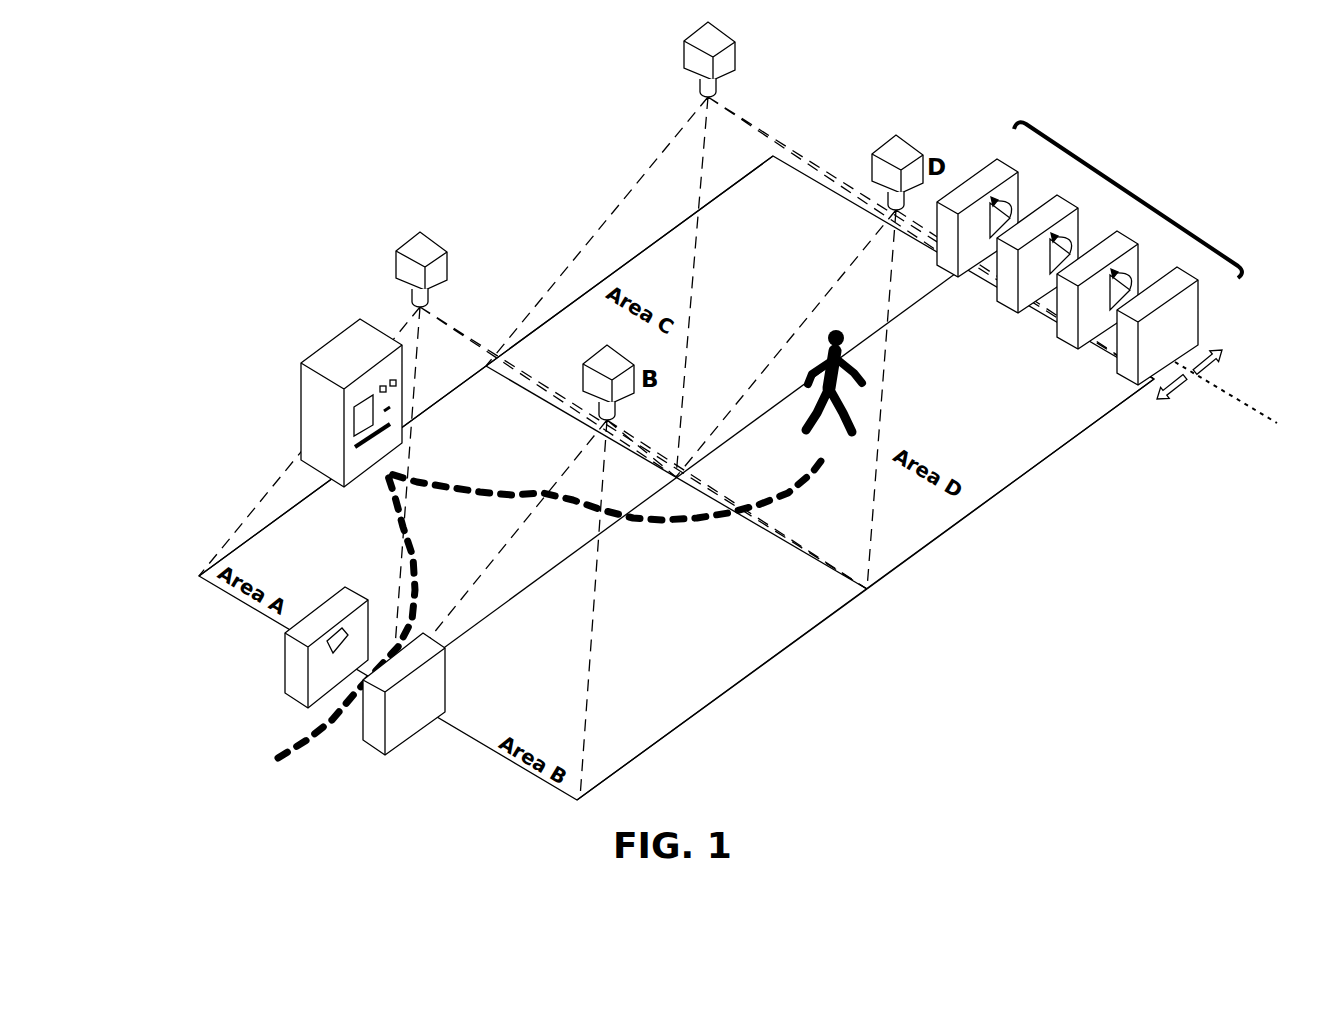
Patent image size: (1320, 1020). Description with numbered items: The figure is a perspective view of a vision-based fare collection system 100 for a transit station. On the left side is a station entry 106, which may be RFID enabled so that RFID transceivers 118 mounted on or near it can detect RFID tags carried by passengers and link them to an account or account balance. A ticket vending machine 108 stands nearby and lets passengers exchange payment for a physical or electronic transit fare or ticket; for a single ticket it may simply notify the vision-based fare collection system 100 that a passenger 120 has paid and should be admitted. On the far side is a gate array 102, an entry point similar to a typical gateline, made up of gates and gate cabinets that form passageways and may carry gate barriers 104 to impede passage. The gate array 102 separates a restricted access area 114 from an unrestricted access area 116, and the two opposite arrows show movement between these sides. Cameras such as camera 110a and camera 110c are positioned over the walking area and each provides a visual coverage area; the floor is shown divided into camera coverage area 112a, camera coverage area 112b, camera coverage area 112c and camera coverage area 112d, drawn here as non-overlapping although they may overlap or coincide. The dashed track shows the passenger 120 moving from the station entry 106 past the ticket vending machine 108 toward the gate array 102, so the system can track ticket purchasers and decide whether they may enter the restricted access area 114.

The vision-based fare collection system 100 is at (163, 762).
The gate array 102 is at (1089, 253).
The gate barriers 104 is at (1123, 273).
The station entry 106 is at (290, 632).
The ticket vending machine 108 is at (327, 340).
The camera 110a is at (407, 242).
The camera 110c is at (684, 56).
The camera coverage area 112a is at (240, 548).
The camera coverage area 112b is at (722, 701).
The camera coverage area 112c is at (563, 308).
The camera coverage area 112d is at (1036, 470).
The restricted access area 114 is at (1227, 371).
The unrestricted access area 116 is at (1191, 397).
The RFID transceivers 118 is at (335, 637).
The passenger 120 is at (858, 396).